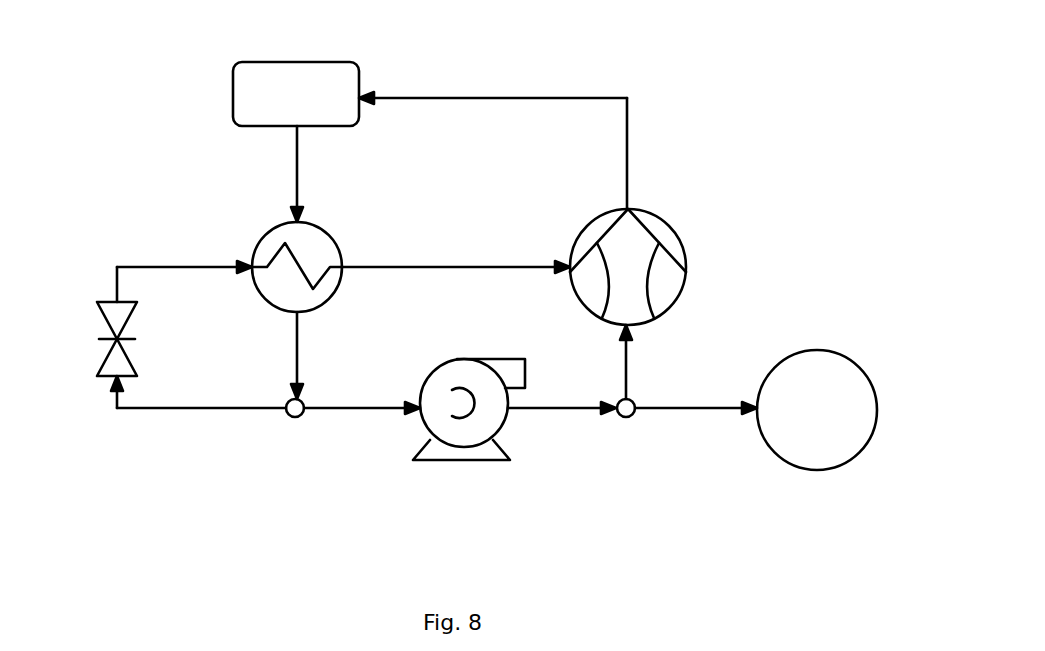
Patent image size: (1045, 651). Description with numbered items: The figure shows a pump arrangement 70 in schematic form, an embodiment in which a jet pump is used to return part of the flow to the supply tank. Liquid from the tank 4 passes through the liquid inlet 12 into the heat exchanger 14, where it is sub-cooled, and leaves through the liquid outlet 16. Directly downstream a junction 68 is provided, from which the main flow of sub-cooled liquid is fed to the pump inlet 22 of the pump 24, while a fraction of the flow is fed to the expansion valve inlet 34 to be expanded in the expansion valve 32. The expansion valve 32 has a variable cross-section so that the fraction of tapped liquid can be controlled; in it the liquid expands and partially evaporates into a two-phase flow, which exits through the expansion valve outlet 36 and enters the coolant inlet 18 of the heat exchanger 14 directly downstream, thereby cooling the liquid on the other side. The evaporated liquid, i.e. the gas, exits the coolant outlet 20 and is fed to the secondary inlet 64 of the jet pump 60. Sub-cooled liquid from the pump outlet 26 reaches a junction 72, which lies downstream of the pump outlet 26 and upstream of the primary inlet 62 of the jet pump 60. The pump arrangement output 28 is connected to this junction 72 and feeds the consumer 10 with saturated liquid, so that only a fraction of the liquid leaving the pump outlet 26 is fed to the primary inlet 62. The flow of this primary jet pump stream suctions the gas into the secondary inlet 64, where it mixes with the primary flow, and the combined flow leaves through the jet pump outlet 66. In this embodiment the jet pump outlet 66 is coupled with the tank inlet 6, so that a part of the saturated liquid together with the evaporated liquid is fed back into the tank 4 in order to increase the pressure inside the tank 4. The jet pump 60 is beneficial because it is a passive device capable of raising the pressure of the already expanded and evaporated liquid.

The tank 4 is at (352, 78).
The tank inlet 6 is at (362, 104).
The consumer 10 is at (820, 368).
The liquid inlet 12 is at (290, 222).
The heat exchanger 14 is at (325, 243).
The liquid outlet 16 is at (290, 311).
The coolant inlet 18 is at (252, 277).
The coolant outlet 20 is at (343, 269).
The pump inlet 22 is at (420, 415).
The pump 24 is at (471, 375).
The pump outlet 26 is at (512, 413).
The pump arrangement output 28 is at (697, 405).
The expansion valve 32 is at (100, 362).
The expansion valve inlet 34 is at (114, 380).
The expansion valve outlet 36 is at (117, 300).
The jet pump 60 is at (677, 240).
The primary inlet 62 is at (622, 326).
The secondary inlet 64 is at (568, 262).
The jet pump outlet 66 is at (632, 206).
The junction 68 is at (298, 418).
The pump arrangement 70 is at (700, 118).
The junction 72 is at (623, 418).